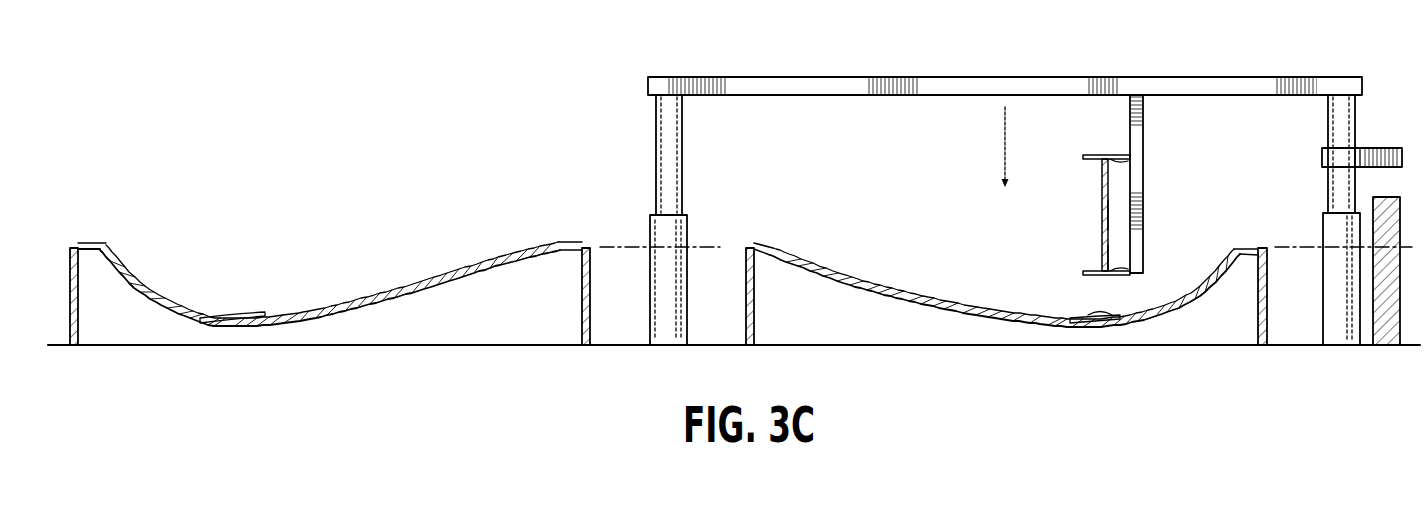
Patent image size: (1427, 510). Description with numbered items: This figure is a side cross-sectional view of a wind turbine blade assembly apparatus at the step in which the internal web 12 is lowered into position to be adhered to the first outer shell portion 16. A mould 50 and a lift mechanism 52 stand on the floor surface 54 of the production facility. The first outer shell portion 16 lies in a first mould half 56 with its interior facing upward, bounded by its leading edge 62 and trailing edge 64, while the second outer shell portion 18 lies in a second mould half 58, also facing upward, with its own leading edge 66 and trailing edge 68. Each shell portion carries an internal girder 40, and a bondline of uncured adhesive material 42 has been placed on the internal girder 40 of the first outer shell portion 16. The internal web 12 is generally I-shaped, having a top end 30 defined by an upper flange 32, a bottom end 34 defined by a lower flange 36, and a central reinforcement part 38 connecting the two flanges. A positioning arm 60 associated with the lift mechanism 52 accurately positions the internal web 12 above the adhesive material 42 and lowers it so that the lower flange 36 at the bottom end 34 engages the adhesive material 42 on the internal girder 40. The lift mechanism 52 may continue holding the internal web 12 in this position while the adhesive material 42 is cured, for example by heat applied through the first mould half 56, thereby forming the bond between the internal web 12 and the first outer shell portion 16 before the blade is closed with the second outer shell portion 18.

The internal web 12 is at (1100, 196).
The first outer shell portion 16 is at (954, 292).
The second outer shell portion 18 is at (330, 284).
The top end 30 is at (1072, 158).
The upper flange 32 is at (1102, 155).
The bottom end 34 is at (1080, 273).
The lower flange 36 is at (1100, 268).
The central reinforcement part 38 is at (1101, 208).
The internal girder 40 is at (228, 311).
The adhesive material 42 is at (1100, 311).
The mould 50 is at (1268, 309).
The lift mechanism 52 is at (656, 160).
The floor surface 54 is at (806, 343).
The first mould half 56 is at (746, 302).
The second mould half 58 is at (591, 303).
The positioning arm 60 is at (1143, 200).
The leading edge 62 is at (1240, 250).
The trailing edge 64 is at (798, 251).
The leading edge 66 is at (100, 250).
The trailing edge 68 is at (543, 247).